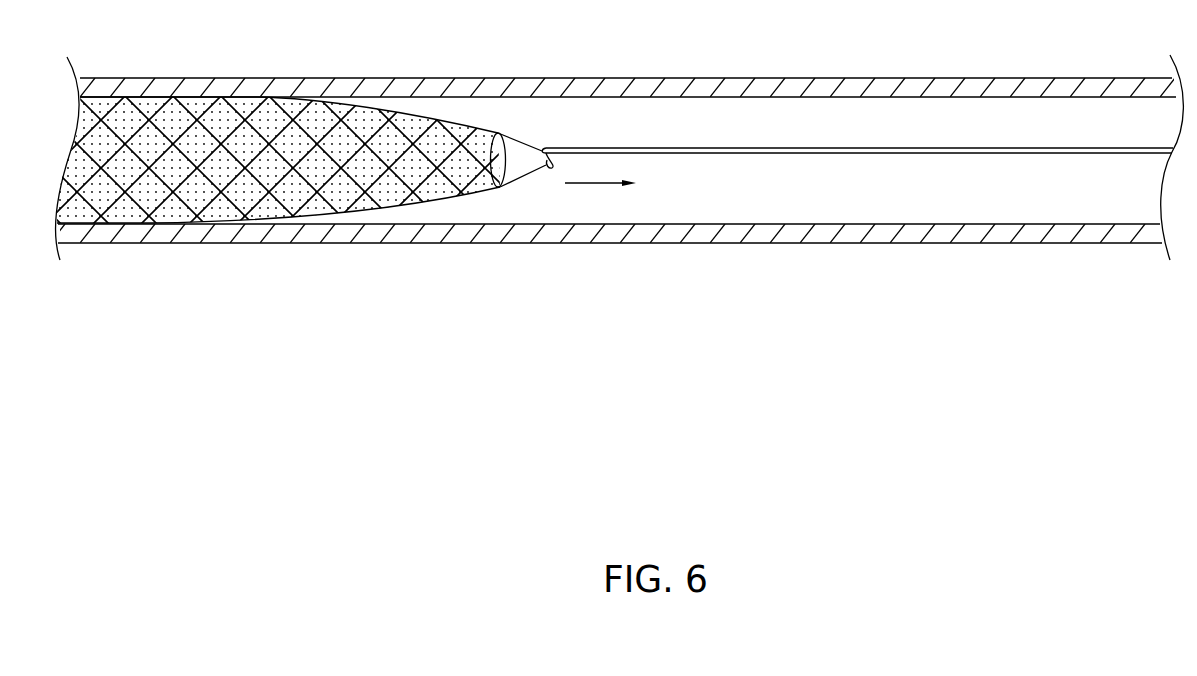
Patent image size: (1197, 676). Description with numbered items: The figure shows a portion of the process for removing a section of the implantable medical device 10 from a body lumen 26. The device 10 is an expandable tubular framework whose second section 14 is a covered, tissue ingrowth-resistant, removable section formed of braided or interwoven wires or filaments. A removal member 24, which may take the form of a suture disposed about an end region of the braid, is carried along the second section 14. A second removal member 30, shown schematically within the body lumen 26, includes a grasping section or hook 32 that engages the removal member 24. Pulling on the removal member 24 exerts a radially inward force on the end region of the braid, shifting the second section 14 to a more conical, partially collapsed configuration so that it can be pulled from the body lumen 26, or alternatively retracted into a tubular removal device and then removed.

The implantable medical device 10 is at (373, 99).
The second section 14 is at (137, 94).
The removal member 24 is at (525, 175).
The body lumen 26 is at (910, 82).
The second removal member 30 is at (714, 139).
The grasping section or hook 32 is at (543, 151).